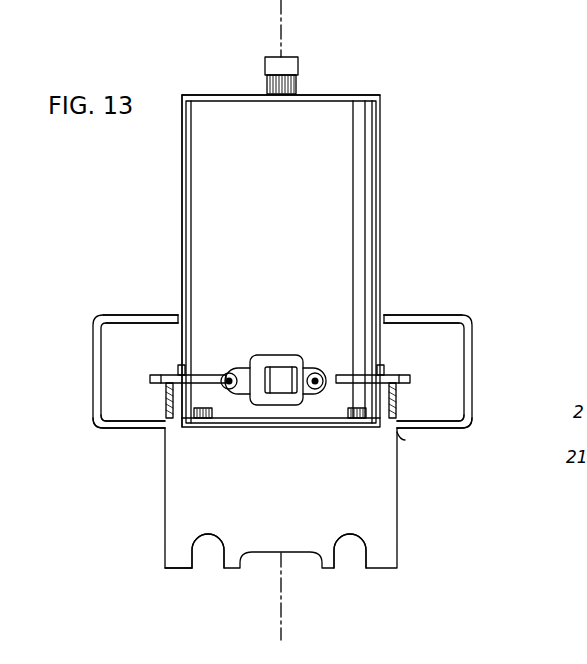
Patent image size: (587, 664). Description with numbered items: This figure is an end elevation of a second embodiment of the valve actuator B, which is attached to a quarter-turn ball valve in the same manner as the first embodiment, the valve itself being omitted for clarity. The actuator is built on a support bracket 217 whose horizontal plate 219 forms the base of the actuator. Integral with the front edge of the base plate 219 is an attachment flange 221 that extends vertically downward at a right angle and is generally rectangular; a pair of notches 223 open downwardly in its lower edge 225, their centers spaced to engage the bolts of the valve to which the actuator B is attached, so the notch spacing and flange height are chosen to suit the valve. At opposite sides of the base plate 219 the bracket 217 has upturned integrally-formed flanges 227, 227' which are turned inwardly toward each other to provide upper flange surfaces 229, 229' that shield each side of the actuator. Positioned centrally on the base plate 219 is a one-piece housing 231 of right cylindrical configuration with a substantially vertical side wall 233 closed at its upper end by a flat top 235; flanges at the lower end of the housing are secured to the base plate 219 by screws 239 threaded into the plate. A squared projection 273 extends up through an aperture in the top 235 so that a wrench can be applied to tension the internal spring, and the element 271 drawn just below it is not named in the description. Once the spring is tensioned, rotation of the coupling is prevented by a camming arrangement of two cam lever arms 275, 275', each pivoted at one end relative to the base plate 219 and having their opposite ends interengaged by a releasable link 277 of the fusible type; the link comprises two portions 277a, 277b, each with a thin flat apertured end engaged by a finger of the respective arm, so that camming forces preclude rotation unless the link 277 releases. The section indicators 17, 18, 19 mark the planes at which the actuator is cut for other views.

The valve actuator B is at (402, 156).
The housing 231 is at (380, 97).
The side wall 233 is at (182, 155).
The flat top 235 is at (348, 84).
The projection 273 is at (276, 57).
The neck 271 is at (266, 84).
The upturned flange 227 is at (135, 322).
The upper flange surface 229 is at (140, 295).
The upturned flange 227' is at (429, 357).
The upper flange surface 229' is at (423, 296).
The horizontal plate 219 is at (120, 432).
The support bracket 217 is at (458, 432).
The cam lever arm 275 is at (192, 356).
The cam lever arm 275' is at (362, 351).
The releasable link 277 is at (268, 357).
The link portion 277a is at (238, 368).
The link portion 277b is at (305, 368).
The screws 239 is at (210, 420).
The attachment flange 221 is at (398, 510).
The notches 223 is at (222, 562).
The lower edge 225 is at (176, 570).
The section line 17 is at (137, 343).
The section line 18 is at (292, 22).
The section line 19 is at (82, 401).